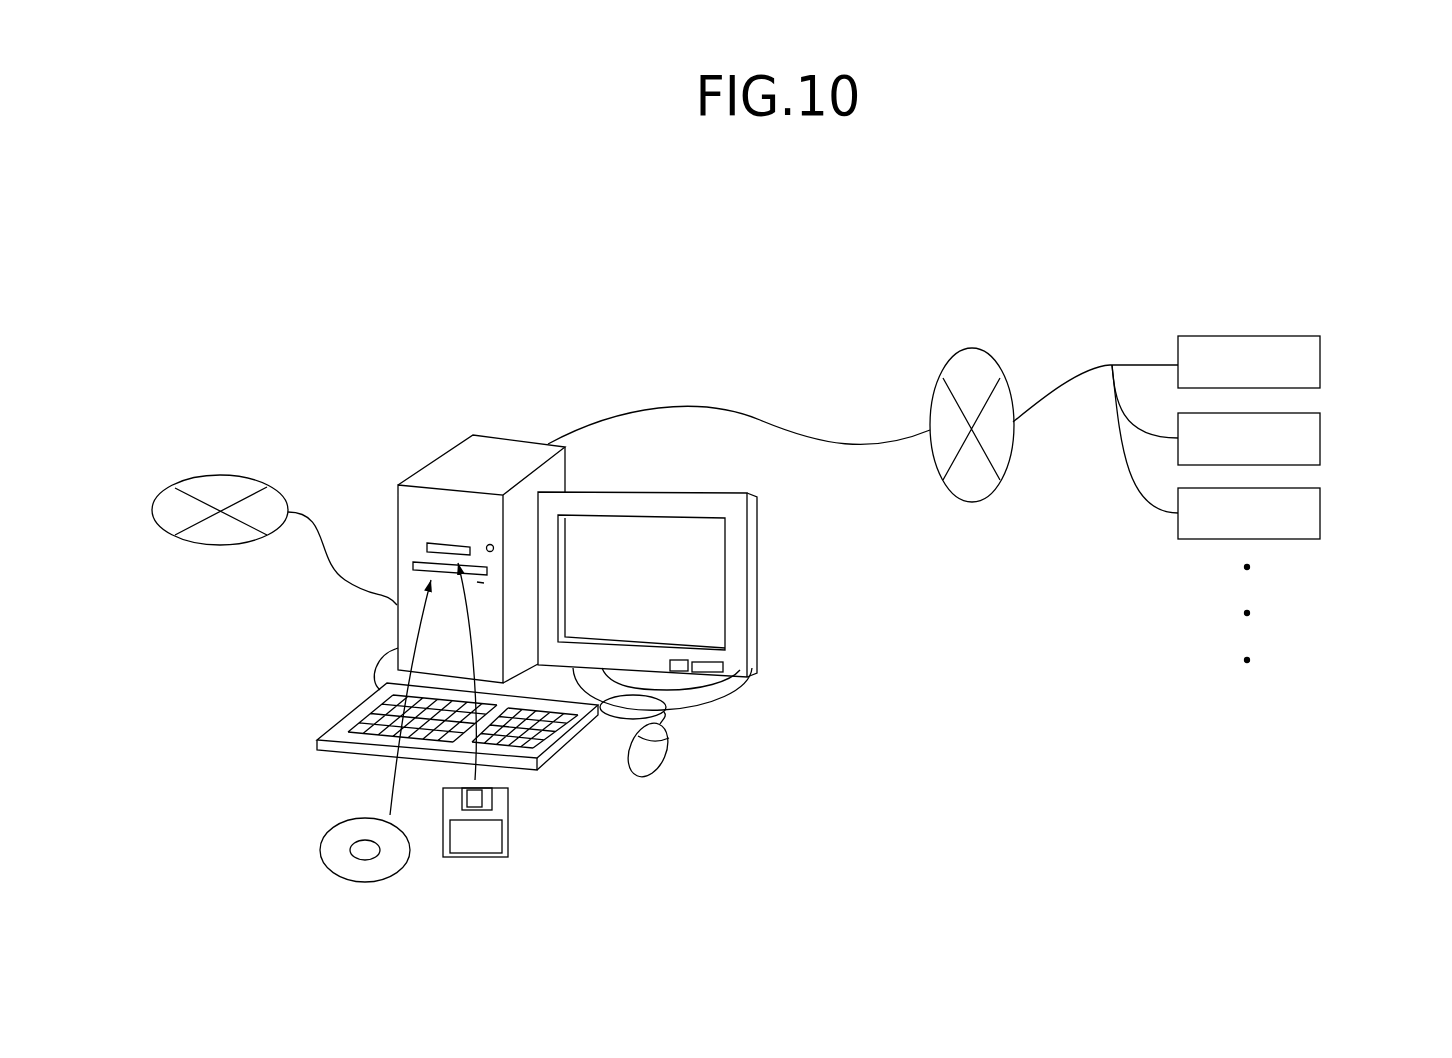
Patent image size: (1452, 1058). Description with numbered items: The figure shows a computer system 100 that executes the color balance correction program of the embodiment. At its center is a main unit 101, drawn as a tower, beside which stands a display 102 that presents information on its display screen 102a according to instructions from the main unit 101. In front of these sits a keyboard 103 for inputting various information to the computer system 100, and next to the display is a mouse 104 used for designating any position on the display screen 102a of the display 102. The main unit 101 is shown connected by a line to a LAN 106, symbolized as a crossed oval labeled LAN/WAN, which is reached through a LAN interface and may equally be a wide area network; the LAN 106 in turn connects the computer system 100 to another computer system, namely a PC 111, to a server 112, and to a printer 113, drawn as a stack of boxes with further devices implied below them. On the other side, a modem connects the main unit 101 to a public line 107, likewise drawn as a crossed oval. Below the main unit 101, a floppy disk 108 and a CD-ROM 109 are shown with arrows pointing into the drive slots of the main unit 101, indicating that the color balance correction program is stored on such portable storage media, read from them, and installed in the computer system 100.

The computer system 100 is at (593, 336).
The main unit 101 is at (487, 446).
The display 102 is at (722, 455).
The display screen 102a is at (658, 482).
The keyboard 103 is at (345, 718).
The mouse 104 is at (660, 758).
The LAN 106 is at (972, 503).
The public line 107 is at (163, 535).
The floppy disk 108 is at (474, 858).
The CD-ROM 109 is at (320, 852).
The computer system (PC) 111 is at (1320, 358).
The server 112 is at (1320, 435).
The printer 113 is at (1320, 510).